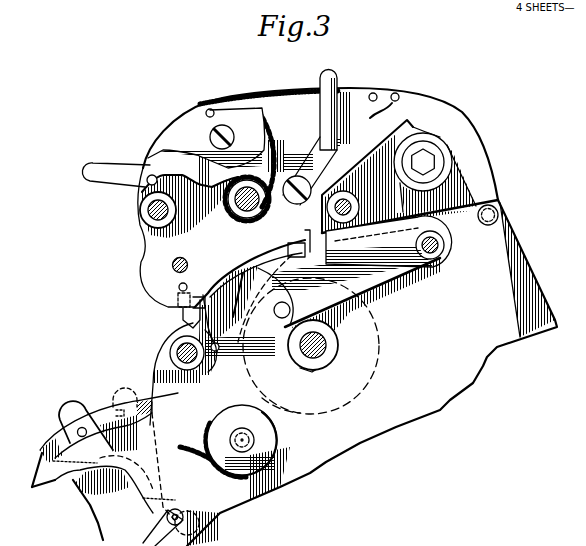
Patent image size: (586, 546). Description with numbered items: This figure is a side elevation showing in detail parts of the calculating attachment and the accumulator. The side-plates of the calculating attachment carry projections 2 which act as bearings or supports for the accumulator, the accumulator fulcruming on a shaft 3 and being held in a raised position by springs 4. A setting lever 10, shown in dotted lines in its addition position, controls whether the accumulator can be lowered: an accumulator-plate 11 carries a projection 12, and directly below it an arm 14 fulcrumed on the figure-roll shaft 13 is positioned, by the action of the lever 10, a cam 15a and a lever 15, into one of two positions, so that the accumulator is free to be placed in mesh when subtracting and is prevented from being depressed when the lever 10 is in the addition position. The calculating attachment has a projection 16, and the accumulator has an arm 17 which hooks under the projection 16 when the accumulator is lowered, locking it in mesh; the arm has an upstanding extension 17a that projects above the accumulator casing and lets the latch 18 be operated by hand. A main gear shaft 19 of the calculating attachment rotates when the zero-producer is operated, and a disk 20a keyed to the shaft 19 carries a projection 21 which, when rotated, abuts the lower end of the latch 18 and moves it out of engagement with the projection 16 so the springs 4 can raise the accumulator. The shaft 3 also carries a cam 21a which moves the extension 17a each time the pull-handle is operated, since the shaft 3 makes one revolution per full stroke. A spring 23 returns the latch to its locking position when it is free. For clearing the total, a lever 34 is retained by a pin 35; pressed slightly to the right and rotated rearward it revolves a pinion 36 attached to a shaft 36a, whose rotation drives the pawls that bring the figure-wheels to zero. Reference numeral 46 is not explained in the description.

The projections 2 is at (443, 190).
The shaft 3 is at (430, 153).
The springs 4 is at (500, 243).
The setting lever 10 is at (75, 410).
The accumulator-plate 11 is at (143, 243).
The projection 12 is at (178, 287).
The figure-roll shaft 13 is at (176, 350).
The arm 14 is at (186, 326).
The lever 15 is at (302, 371).
The cam 15a is at (268, 433).
The projection 16 is at (303, 250).
The arm 17 is at (280, 229).
The upstanding extension 17a is at (333, 64).
The latch 18 is at (320, 248).
The main gear shaft 19 is at (338, 343).
The disk 20a is at (379, 373).
The projection 21 is at (284, 413).
The cam 21a is at (413, 123).
The spring 23 is at (388, 92).
The lever 34 is at (110, 166).
The pin 35 is at (147, 182).
The pinion 36 is at (232, 215).
The shaft 36a is at (250, 185).
The pin 46 is at (172, 267).